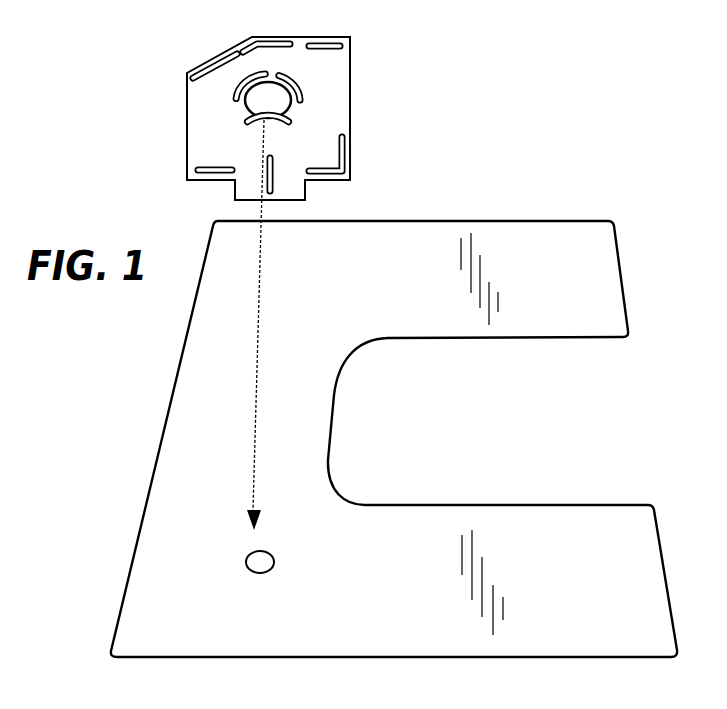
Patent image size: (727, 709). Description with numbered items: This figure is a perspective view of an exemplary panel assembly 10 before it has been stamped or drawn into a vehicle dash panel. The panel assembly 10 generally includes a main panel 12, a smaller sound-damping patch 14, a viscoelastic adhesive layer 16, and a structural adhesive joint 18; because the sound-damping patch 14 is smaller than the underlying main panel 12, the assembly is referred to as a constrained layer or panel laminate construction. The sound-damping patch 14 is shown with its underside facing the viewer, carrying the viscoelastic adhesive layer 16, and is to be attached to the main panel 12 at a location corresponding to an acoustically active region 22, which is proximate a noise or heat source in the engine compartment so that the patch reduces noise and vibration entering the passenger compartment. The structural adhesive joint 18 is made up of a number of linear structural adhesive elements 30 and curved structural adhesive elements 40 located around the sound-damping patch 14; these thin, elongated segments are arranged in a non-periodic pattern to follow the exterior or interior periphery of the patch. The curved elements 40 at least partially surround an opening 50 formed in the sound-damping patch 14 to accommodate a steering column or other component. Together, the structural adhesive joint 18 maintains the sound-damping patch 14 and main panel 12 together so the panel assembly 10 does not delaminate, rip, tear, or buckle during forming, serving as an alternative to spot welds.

The panel assembly 10 is at (127, 337).
The main panel 12 is at (603, 272).
The sound-damping patch 14 is at (350, 125).
The viscoelastic adhesive layer 16 is at (203, 144).
The structural adhesive joint 18 is at (303, 85).
The acoustically active region 22 is at (203, 540).
The linear structural adhesive elements 30 is at (210, 72).
The curved structural adhesive elements 40 is at (235, 98).
The opening 50 is at (273, 102).